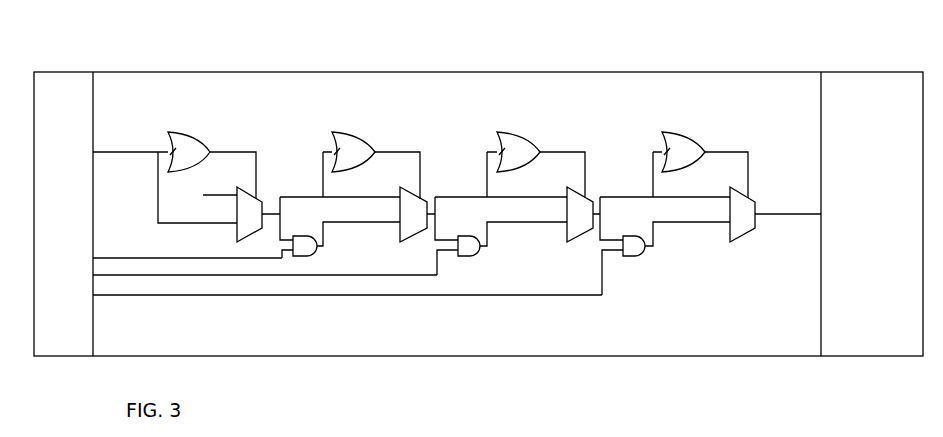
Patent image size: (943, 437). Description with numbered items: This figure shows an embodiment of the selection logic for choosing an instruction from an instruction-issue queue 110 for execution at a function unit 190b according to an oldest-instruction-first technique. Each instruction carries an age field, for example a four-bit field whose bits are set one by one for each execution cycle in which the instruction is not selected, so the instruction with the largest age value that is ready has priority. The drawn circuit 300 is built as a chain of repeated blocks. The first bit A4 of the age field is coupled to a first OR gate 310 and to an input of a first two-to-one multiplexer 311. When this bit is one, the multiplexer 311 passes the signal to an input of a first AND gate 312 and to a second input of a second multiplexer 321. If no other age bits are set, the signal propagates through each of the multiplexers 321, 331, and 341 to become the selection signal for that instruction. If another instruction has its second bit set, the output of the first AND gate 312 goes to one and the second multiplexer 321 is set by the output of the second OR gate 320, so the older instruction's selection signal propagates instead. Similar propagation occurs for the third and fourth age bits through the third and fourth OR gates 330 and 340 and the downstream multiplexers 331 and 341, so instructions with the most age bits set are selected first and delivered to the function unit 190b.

The instruction-issue queue 110 is at (76, 92).
The function unit 190b is at (864, 214).
The cascade OR/mux chain circuit 300 is at (640, 380).
The first OR gate 310 is at (200, 125).
The second OR gate 320 is at (362, 125).
The third OR gate 330 is at (525, 124).
The fourth OR gate 340 is at (688, 122).
The first 2-to-1 multiplexer 311 is at (257, 255).
The second multiplexer 321 is at (416, 255).
The third multiplexer 331 is at (570, 255).
The fourth multiplexer 341 is at (726, 258).
The first AND gate 312 is at (310, 268).